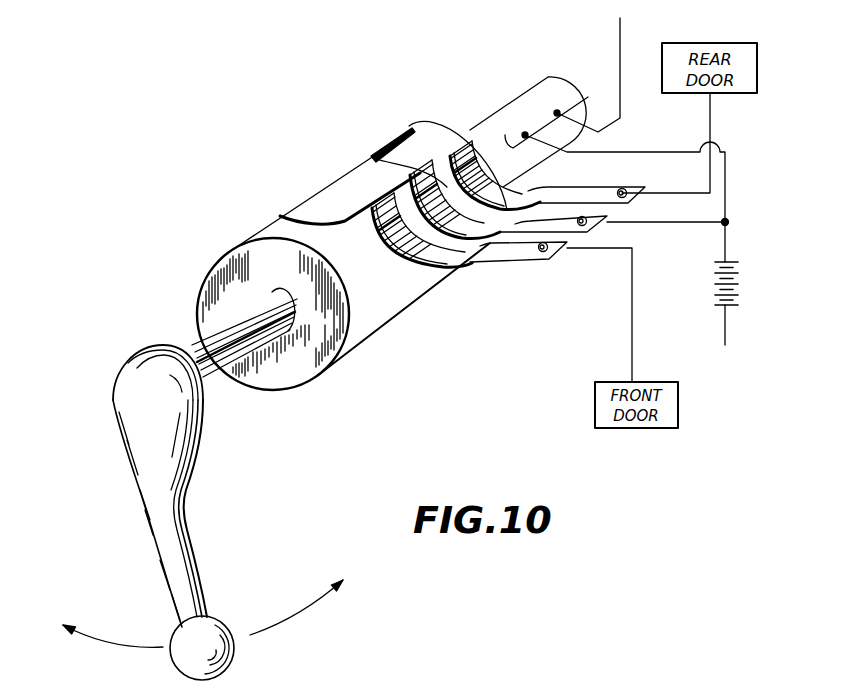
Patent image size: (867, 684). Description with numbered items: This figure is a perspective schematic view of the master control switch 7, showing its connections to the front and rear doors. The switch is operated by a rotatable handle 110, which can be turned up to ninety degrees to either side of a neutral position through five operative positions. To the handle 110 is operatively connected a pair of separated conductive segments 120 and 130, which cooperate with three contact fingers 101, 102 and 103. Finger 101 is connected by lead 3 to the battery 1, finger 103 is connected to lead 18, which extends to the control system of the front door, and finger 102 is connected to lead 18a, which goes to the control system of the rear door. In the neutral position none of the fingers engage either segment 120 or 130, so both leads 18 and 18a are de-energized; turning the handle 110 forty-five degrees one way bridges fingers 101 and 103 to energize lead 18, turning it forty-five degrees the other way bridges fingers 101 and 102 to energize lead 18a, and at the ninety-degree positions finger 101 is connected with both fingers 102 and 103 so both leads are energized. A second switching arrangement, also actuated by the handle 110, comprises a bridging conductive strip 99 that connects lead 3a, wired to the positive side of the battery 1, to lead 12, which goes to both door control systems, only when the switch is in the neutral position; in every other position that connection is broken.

The master control switch 7 is at (357, 150).
The conductive segment 130 is at (333, 189).
The conductive segment 120 is at (428, 290).
The operating handle 110 is at (193, 525).
The bridging conductive strip 99 is at (577, 97).
The contact finger 102 is at (622, 188).
The contact finger 101 is at (600, 227).
The contact finger 103 is at (532, 262).
The lead 12 is at (621, 24).
The lead 3a is at (615, 151).
The lead 3 is at (689, 222).
The battery 1 is at (714, 273).
The lead 18a is at (712, 133).
The lead 18 is at (634, 338).